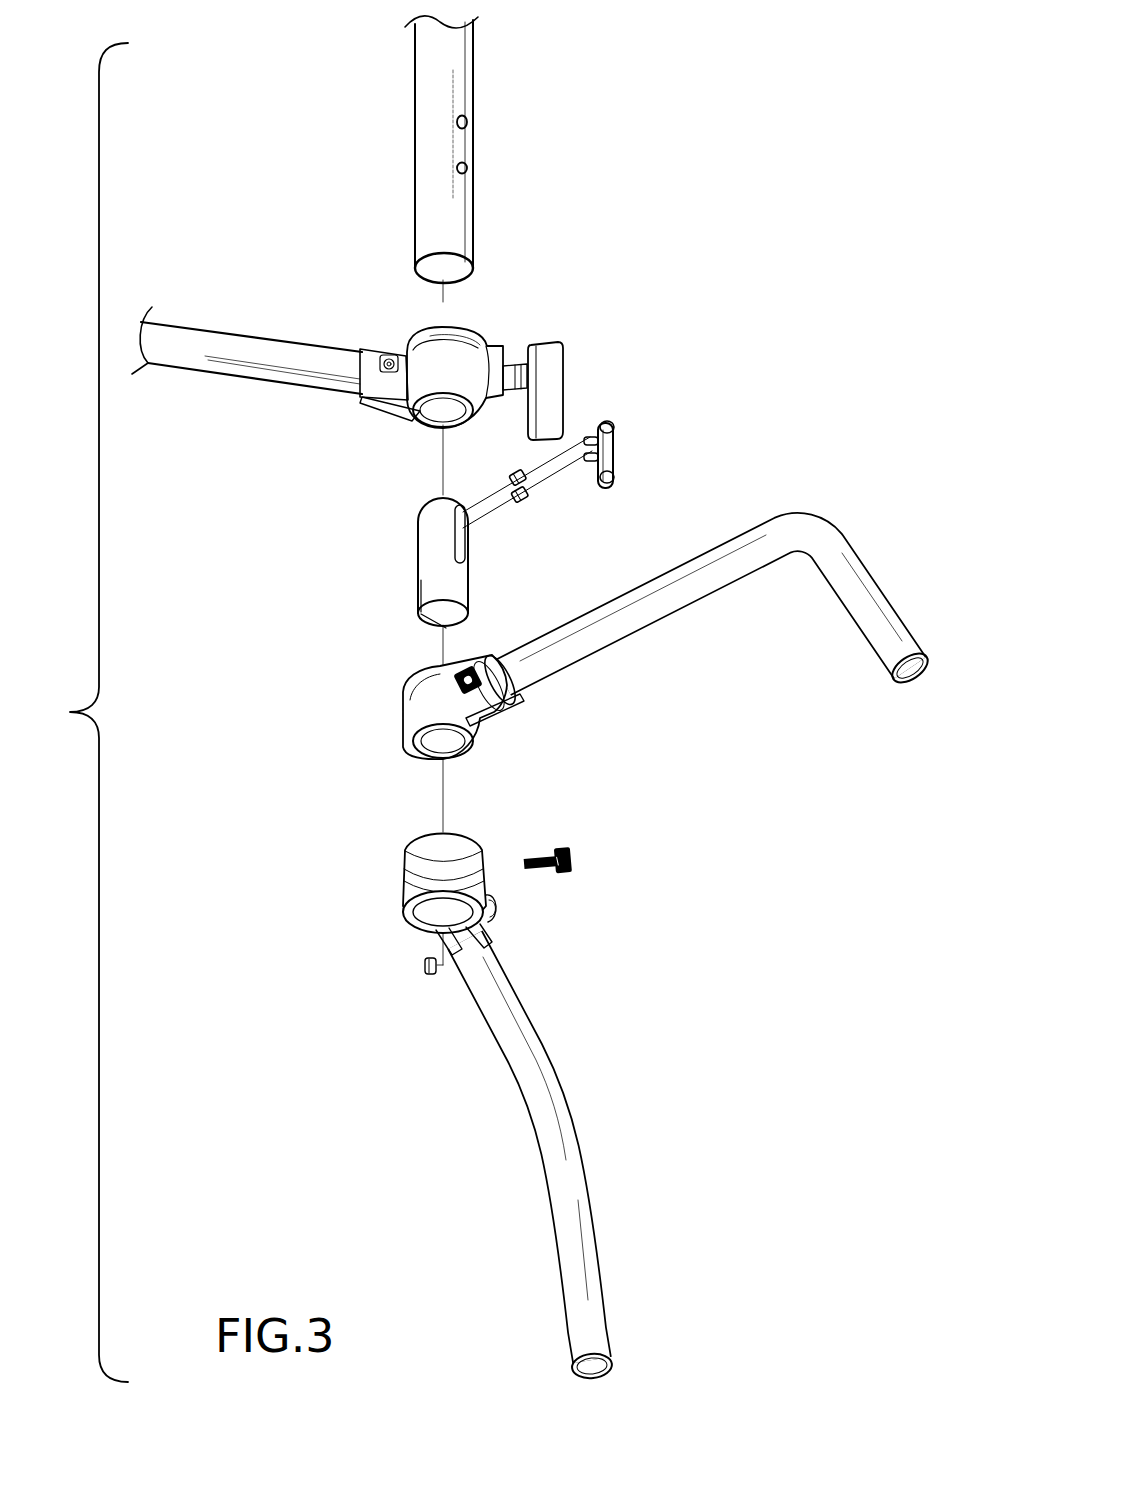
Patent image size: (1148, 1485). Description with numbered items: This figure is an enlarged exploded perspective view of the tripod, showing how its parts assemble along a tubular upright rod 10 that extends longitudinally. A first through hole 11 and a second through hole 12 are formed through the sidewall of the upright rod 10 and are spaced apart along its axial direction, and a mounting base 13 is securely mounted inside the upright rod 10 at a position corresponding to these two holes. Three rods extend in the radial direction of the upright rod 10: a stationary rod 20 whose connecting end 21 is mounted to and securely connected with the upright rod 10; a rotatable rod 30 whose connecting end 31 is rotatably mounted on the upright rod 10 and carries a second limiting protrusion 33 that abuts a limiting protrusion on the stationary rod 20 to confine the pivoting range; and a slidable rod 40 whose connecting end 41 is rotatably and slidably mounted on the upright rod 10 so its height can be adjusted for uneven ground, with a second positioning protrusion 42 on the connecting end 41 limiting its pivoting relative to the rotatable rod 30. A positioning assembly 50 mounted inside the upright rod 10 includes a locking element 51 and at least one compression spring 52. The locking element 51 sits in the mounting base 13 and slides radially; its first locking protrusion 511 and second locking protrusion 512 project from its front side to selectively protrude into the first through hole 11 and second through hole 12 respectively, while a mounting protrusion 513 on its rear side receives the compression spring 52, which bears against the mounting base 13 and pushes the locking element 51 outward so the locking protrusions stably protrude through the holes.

The upright rod 10 is at (430, 78).
The first through hole 11 is at (470, 168).
The second through hole 12 is at (470, 121).
The mounting base 13 is at (420, 545).
The stationary rod 20 is at (553, 1090).
The connecting end 21 is at (406, 878).
The rotatable rod 30 is at (670, 598).
The connecting end 31 is at (410, 708).
The second limiting protrusion 33 is at (418, 752).
The slidable rod 40 is at (197, 340).
The connecting end 41 is at (452, 358).
The second positioning protrusion 42 is at (428, 418).
The positioning assembly 50 is at (576, 461).
The locking element 51 is at (614, 455).
The first locking protrusion 511 is at (613, 478).
The second locking protrusion 512 is at (613, 427).
The mounting protrusion 513 is at (588, 437).
The compression spring 52 is at (523, 501).